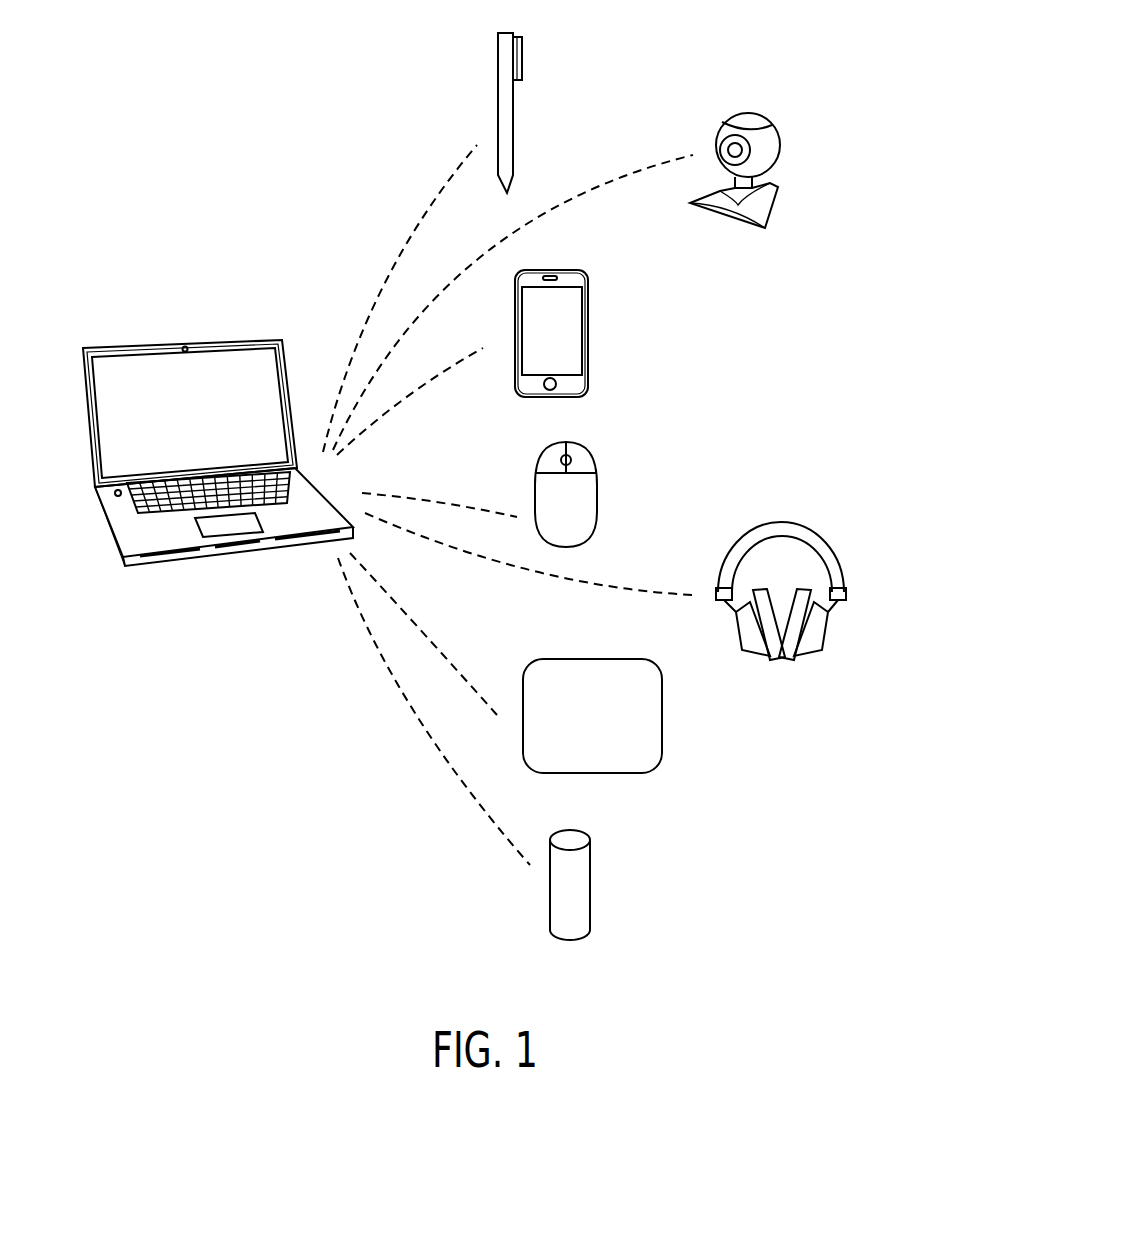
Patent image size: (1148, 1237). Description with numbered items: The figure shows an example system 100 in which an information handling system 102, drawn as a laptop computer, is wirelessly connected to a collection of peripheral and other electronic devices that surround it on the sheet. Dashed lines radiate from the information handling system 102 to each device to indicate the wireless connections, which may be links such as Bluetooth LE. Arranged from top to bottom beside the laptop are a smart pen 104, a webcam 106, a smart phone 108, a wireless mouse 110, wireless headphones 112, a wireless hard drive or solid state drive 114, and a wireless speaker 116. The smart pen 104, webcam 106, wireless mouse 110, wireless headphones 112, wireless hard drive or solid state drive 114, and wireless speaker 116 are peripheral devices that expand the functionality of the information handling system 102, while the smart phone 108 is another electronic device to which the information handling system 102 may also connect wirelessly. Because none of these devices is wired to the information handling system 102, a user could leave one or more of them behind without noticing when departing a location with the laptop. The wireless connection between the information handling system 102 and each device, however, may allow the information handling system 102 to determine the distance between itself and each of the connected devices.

The example system 100 is at (218, 78).
The information handling system 102 is at (142, 345).
The smart pen 104 is at (522, 58).
The webcam 106 is at (778, 146).
The smart phone 108 is at (588, 337).
The wireless mouse 110 is at (597, 488).
The wireless headphones 112 is at (845, 583).
The wireless hard drive or solid state drive 114 is at (663, 718).
The wireless speaker 116 is at (590, 888).